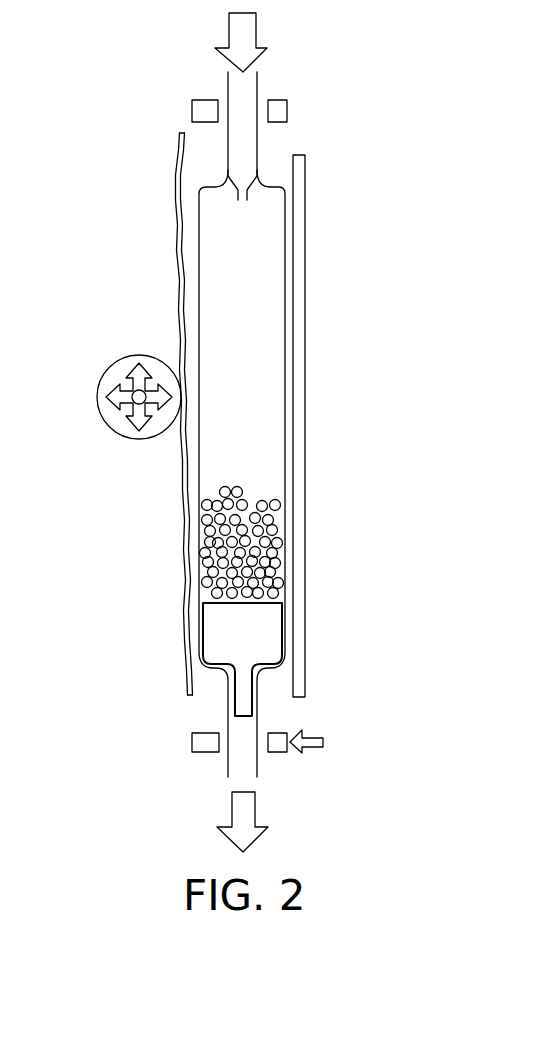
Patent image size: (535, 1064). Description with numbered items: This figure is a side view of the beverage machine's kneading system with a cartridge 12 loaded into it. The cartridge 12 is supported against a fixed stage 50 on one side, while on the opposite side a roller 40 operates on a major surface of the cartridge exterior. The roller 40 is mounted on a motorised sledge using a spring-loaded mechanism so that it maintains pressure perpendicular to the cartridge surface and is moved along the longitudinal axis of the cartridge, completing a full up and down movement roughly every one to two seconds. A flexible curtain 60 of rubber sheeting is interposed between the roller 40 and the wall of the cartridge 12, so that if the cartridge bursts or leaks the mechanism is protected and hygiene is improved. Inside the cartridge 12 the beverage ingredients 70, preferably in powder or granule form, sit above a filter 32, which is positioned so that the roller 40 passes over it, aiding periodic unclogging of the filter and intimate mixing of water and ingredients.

The cartridge 12 is at (255, 263).
The filter 32 is at (220, 633).
The roller 40 is at (135, 366).
The fixed stage 50 is at (305, 354).
The flexible curtain 60 is at (183, 530).
The ingredients 70 is at (273, 530).